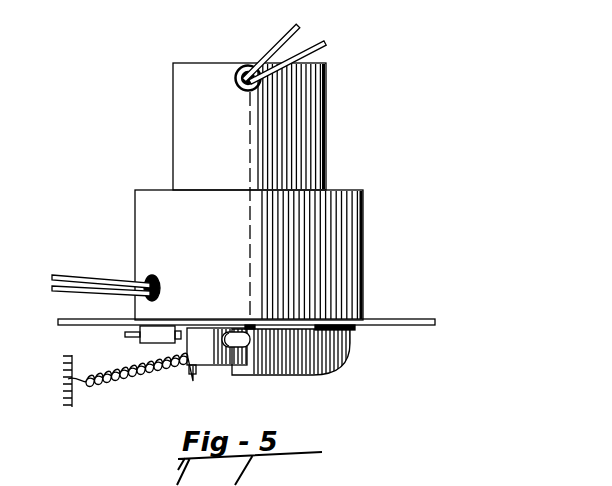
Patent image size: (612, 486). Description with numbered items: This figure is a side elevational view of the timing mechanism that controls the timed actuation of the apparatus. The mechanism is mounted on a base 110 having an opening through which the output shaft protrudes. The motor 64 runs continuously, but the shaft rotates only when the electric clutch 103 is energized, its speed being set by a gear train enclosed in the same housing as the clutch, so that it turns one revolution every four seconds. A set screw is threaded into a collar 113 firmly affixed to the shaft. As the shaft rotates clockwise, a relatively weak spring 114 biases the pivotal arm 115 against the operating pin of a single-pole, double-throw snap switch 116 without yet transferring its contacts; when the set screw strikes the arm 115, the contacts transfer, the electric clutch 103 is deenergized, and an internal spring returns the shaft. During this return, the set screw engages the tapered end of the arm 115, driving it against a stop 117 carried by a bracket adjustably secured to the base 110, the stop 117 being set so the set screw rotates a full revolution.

The motor 64 is at (328, 105).
The electric clutch 103 is at (365, 216).
The base 110 is at (408, 318).
The collar 113 is at (249, 340).
The spring 114 is at (128, 386).
The pivotal arm 115 is at (220, 366).
The snap switch 116 is at (157, 339).
The stop 117 is at (322, 352).